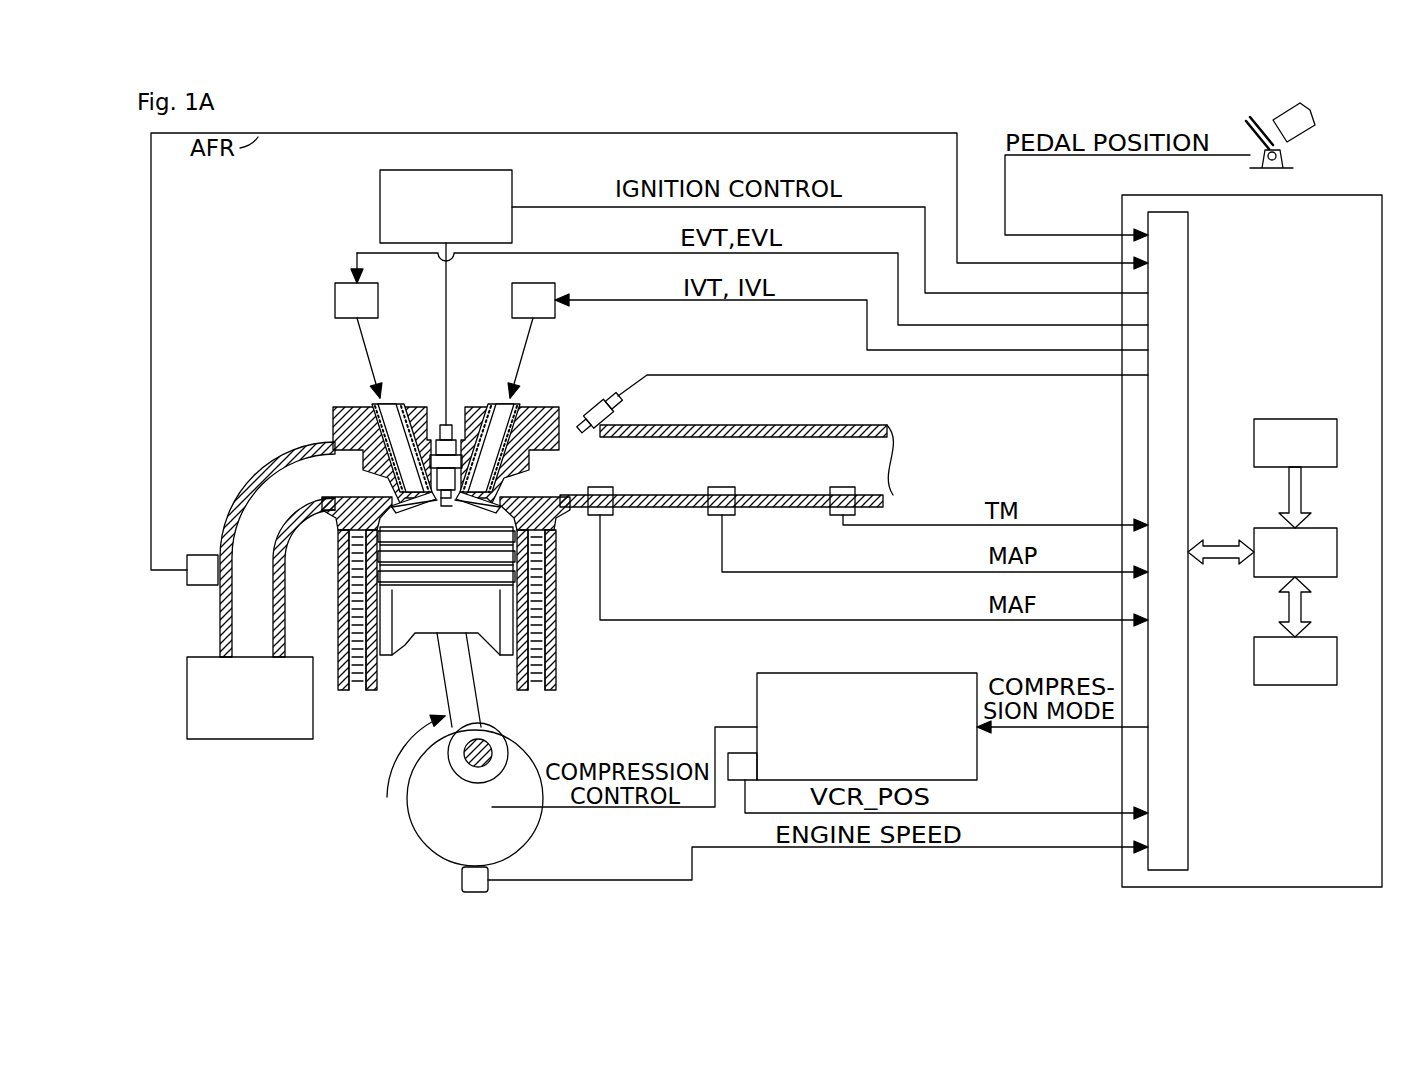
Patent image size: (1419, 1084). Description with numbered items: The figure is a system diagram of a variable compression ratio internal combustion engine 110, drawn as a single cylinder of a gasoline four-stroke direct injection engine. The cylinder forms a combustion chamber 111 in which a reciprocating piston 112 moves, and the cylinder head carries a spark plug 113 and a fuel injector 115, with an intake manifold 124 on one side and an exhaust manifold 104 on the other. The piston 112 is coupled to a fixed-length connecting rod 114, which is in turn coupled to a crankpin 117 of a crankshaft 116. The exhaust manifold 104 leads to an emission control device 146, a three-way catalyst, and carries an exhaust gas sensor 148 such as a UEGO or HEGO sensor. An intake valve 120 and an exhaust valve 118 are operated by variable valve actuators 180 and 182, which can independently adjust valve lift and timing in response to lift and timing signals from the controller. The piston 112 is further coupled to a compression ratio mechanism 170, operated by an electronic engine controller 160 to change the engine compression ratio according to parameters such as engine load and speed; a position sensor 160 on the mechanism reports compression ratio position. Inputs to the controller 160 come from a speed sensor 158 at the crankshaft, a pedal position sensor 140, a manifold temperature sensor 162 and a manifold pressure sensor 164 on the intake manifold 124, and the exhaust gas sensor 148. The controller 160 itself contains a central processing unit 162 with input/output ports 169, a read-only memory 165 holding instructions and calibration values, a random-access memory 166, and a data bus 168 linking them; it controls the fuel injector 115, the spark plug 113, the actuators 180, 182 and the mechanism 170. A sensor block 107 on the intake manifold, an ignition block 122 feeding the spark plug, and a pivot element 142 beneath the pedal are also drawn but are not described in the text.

The exhaust manifold 104 is at (250, 486).
The mass air flow sensor 107 is at (597, 487).
The engine 110 is at (262, 810).
The combustion chamber 111 is at (490, 682).
The reciprocating piston 112 is at (440, 615).
The spark plug 113 is at (453, 432).
The connecting rod 114 is at (398, 758).
The fuel injector 115 is at (598, 407).
The crankshaft 116 is at (407, 816).
The crankpin 117 is at (494, 748).
The exhaust valve 118 is at (390, 396).
The intake valve 120 is at (500, 396).
The ignition system 122 is at (460, 170).
The intake manifold 124 is at (651, 466).
The pedal position sensor 140 is at (1256, 130).
The pedal position sensor 142 is at (1295, 140).
The emission control device 146 is at (187, 690).
The exhaust gas sensor 148 is at (205, 555).
The speed sensor 158 is at (458, 879).
The engine controller 160 is at (1363, 228).
The central processing unit 162 is at (1318, 528).
The manifold pressure sensor 164 is at (719, 487).
The read-only memory 165 is at (1288, 419).
The random-access memory 166 is at (1316, 637).
The data bus 168 is at (1286, 506).
The input/output ports 169 is at (1188, 260).
The compression ratio mechanism 170 is at (919, 673).
The variable valve actuator 180 is at (394, 304).
The variable valve actuator 182 is at (512, 298).